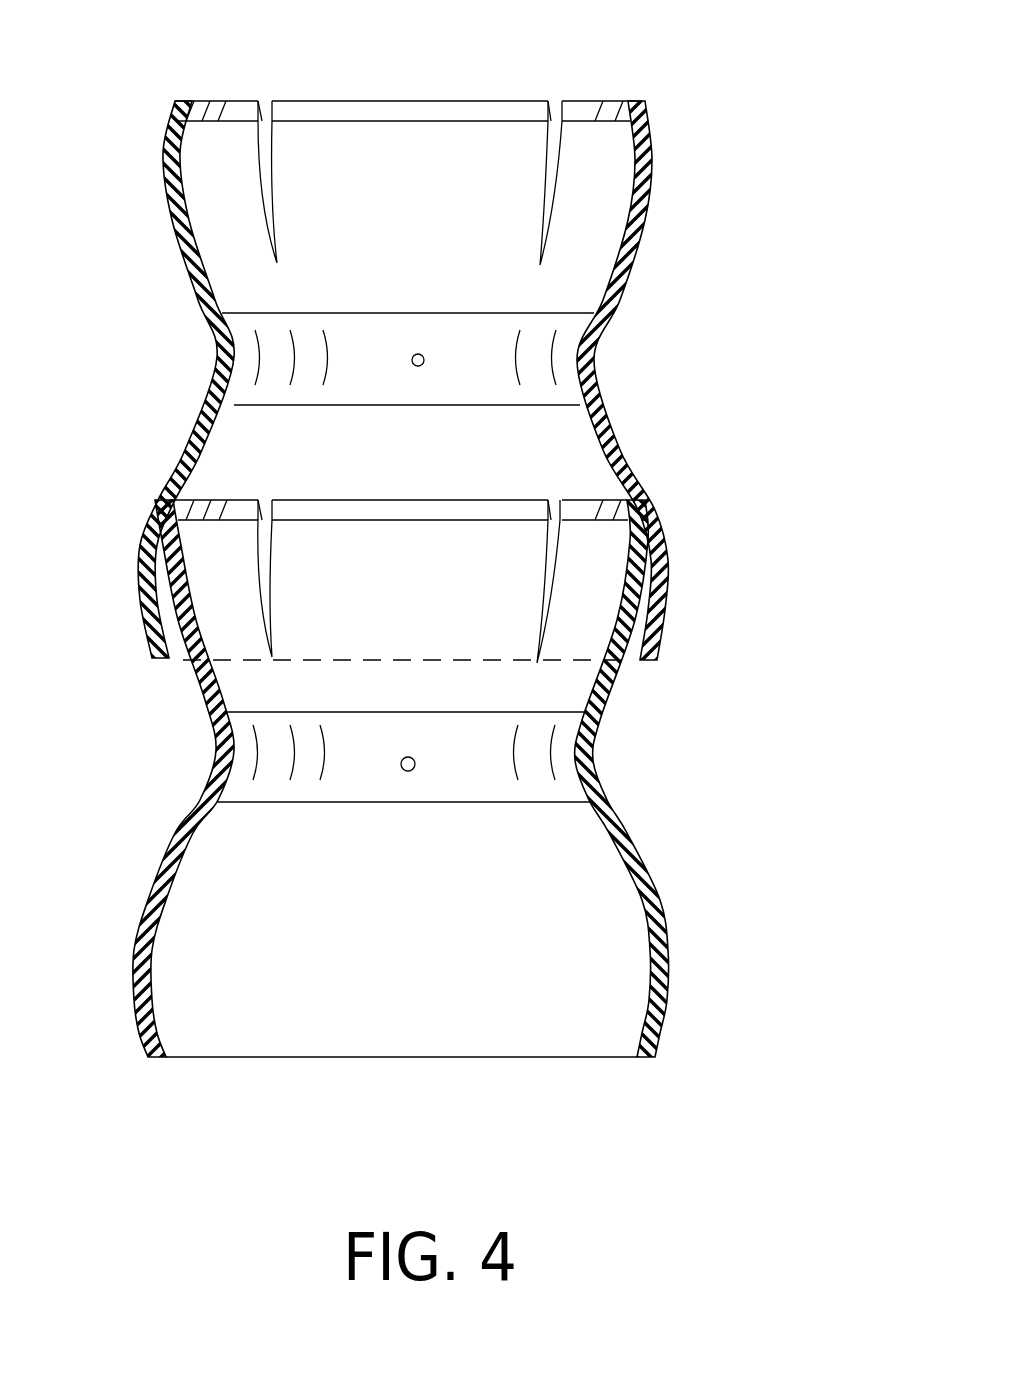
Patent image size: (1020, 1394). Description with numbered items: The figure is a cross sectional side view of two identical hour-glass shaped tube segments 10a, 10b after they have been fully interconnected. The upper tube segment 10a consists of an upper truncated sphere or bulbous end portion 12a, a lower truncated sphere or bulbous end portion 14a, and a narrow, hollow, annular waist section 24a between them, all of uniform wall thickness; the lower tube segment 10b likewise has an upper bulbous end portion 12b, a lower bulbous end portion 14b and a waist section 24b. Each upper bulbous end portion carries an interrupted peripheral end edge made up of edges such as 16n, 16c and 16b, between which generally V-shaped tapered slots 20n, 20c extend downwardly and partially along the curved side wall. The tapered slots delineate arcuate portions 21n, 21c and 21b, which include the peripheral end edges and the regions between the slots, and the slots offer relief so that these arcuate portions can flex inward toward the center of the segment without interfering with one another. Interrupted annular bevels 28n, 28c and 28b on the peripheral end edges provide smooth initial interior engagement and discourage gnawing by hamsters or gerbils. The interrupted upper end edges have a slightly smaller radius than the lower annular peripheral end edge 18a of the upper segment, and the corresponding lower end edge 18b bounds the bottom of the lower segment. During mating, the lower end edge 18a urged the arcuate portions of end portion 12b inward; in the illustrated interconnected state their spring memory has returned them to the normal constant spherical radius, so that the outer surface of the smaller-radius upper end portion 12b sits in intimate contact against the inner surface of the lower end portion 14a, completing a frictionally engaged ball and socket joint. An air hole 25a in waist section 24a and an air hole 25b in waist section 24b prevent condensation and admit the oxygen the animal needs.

The tube segment 10a is at (488, 380).
The tube segment 10b is at (483, 778).
The upper truncated sphere or bulbous end portion 12a is at (652, 190).
The upper truncated sphere or bulbous end portion 12b is at (637, 598).
The lower truncated sphere or bulbous end portion 14a is at (670, 563).
The lower truncated sphere or bulbous end portion 14b is at (668, 942).
The interrupted upper annular surface or peripheral end edge 16n is at (215, 100).
The interrupted upper annular surface or peripheral end edge 16c is at (317, 100).
The interrupted upper annular surface or peripheral end edge 16b is at (593, 102).
The lower annular surface or peripheral end edge 18a is at (313, 662).
The lower annular surface or peripheral end edge 18b is at (537, 1060).
The tapered slot 20n is at (280, 190).
The tapered slot 20c is at (542, 190).
The arcuate portion 21n is at (207, 192).
The arcuate portion 21c is at (460, 165).
The arcuate portion 21b is at (600, 190).
The annular intersection or narrow hollow annular waist section 24a is at (215, 350).
The annular intersection or narrow hollow annular waist section 24b is at (212, 770).
The air hole 25a is at (420, 354).
The air hole 25b is at (411, 771).
The interrupted annular bevel 28n is at (190, 101).
The interrupted annular bevel 28c is at (367, 110).
The interrupted annular bevel 28b is at (612, 103).